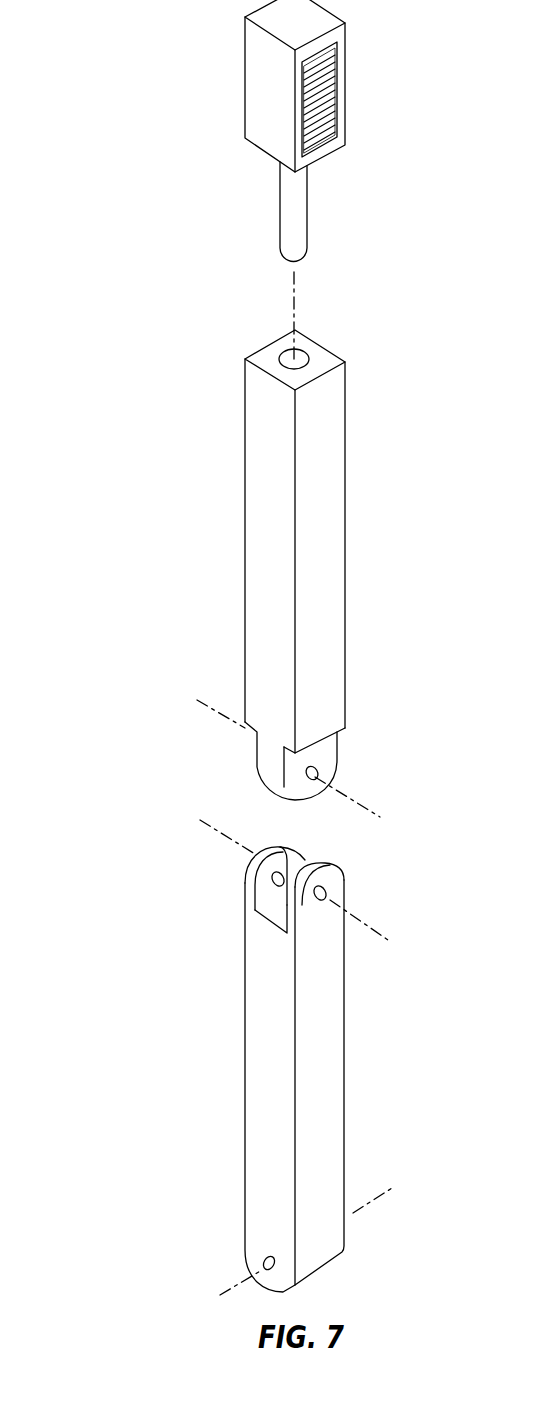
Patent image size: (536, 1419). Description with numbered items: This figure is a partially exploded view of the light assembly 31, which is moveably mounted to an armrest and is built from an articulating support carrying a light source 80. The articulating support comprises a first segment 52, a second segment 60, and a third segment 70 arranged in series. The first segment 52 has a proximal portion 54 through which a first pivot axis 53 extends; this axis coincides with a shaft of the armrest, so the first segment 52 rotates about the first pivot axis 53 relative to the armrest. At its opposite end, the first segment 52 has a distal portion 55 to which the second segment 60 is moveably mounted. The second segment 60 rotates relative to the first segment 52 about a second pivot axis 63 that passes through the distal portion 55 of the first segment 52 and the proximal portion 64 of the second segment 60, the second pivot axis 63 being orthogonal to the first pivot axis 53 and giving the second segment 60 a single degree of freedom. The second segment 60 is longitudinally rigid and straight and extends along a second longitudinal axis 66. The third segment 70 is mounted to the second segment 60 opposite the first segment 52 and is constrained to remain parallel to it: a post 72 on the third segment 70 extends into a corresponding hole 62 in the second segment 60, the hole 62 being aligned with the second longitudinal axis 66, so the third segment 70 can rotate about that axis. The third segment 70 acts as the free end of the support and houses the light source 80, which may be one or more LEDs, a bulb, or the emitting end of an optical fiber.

The light assembly 31 is at (100, 180).
The third segment 70 is at (224, 92).
The light source 80 is at (327, 95).
The post 72 is at (295, 202).
The second longitudinal axis 66 is at (295, 290).
The second segment 60 is at (209, 572).
The hole 62 is at (284, 353).
The proximal portion 64 is at (245, 693).
The second pivot axis 63 is at (342, 788).
The distal portion 55 is at (245, 908).
The first segment 52 is at (209, 1054).
The proximal portion 54 is at (245, 1218).
The first pivot axis 53 is at (375, 1200).